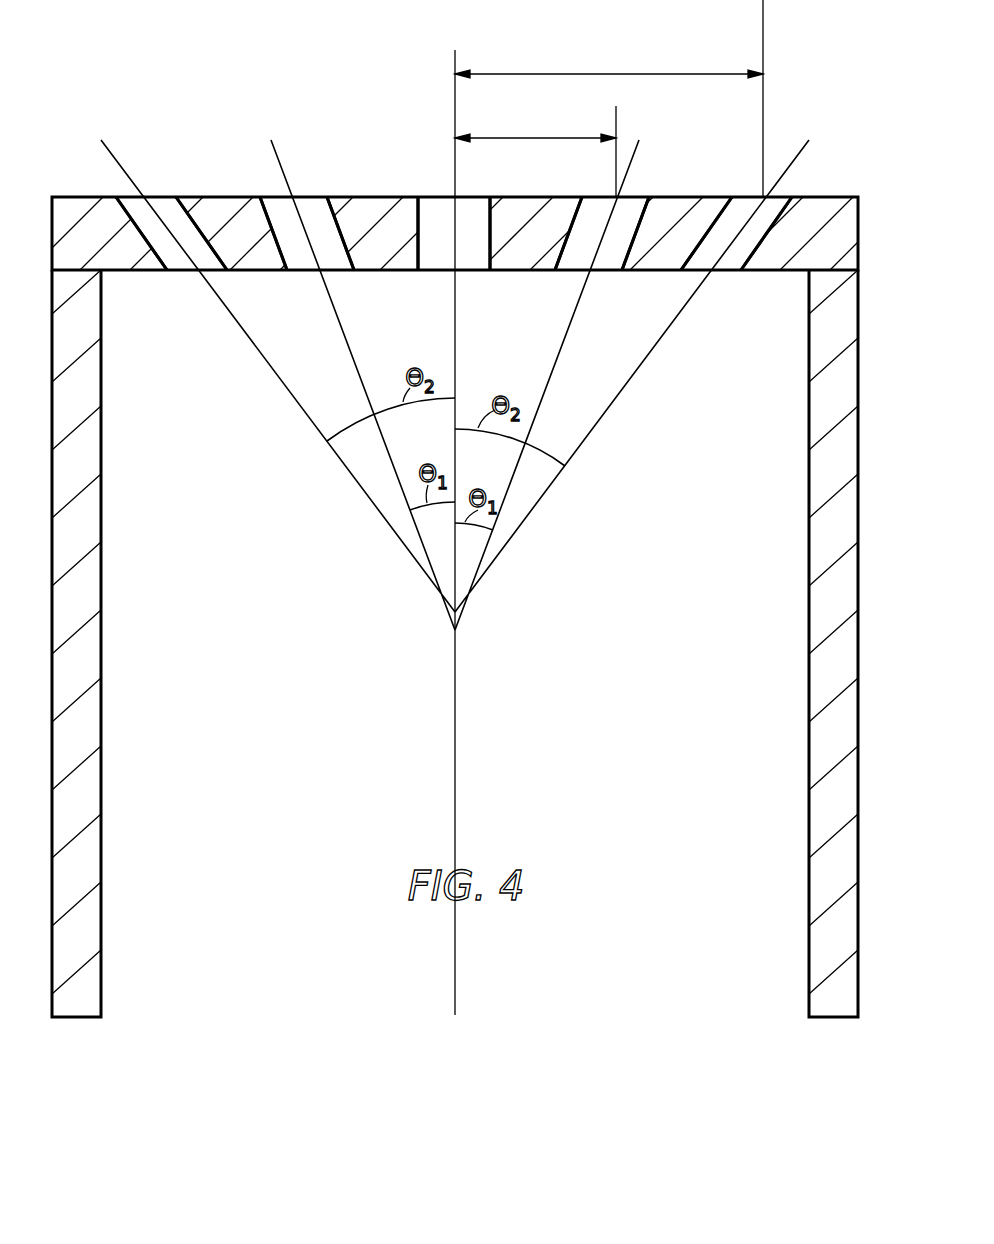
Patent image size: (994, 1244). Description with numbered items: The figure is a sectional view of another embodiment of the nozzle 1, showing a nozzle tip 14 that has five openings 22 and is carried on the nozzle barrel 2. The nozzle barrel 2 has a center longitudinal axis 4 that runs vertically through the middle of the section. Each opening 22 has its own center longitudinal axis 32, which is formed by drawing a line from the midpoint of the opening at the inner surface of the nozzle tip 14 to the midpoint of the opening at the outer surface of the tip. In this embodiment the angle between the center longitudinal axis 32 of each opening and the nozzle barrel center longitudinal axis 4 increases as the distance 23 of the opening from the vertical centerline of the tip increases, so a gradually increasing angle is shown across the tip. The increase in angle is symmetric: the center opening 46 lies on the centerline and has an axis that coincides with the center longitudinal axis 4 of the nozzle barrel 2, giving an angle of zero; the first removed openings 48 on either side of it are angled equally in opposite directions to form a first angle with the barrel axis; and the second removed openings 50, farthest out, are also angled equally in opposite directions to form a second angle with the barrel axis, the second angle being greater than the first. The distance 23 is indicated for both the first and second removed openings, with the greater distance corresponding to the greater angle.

The apparatus 1 is at (337, 28).
The nozzle barrel 2 is at (53, 993).
The nozzle barrel center longitudinal axis 4 is at (456, 840).
The nozzle tip 14 is at (198, 197).
The openings 22 is at (182, 262).
The distance of the opening from the nozzle tip vertical centerline 23 is at (611, 73).
The center longitudinal axis 32 is at (566, 335).
The center opening 46 is at (442, 197).
The first removed openings 48 is at (278, 197).
The second removed openings 50 is at (132, 197).